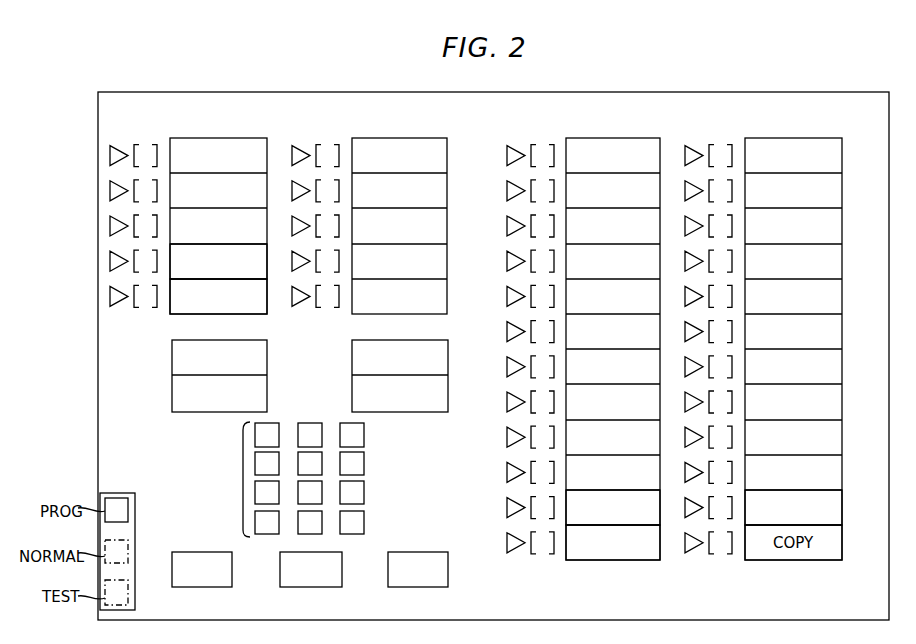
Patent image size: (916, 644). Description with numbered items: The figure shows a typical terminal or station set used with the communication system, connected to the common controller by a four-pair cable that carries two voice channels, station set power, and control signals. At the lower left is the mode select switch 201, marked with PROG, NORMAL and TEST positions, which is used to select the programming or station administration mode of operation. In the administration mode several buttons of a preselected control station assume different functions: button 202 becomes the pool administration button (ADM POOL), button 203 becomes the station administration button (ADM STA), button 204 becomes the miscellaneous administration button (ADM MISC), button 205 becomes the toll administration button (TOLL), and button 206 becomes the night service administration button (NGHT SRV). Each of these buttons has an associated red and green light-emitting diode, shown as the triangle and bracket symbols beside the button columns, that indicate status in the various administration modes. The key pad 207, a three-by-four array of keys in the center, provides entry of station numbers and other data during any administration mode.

The mode select switch 201 is at (118, 493).
The pool administration button 202 is at (267, 278).
The station administration button 203 is at (170, 313).
The miscellaneous administration button 204 is at (660, 518).
The toll administration button 205 is at (622, 560).
The night service administration button 206 is at (842, 513).
The key pad 207 is at (288, 479).